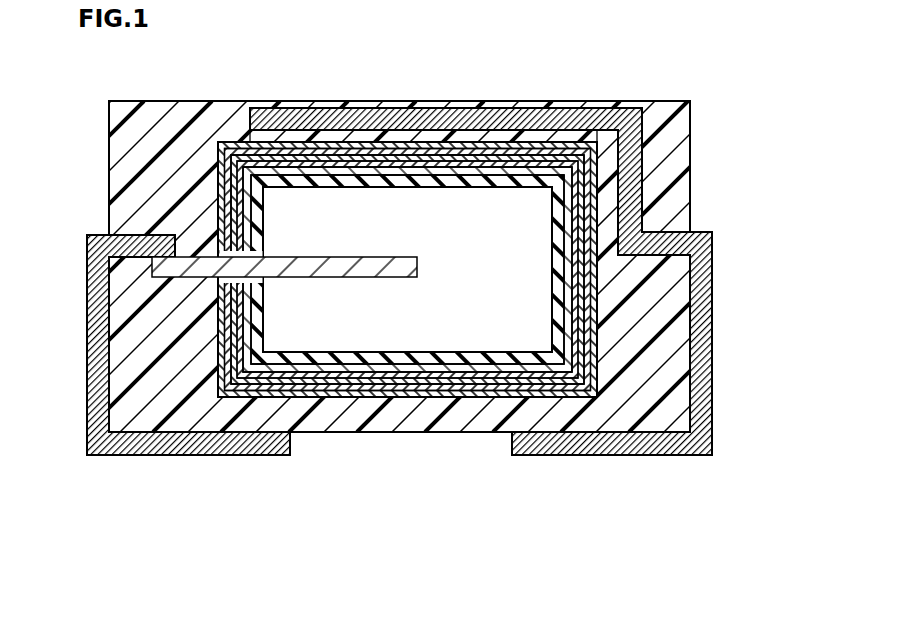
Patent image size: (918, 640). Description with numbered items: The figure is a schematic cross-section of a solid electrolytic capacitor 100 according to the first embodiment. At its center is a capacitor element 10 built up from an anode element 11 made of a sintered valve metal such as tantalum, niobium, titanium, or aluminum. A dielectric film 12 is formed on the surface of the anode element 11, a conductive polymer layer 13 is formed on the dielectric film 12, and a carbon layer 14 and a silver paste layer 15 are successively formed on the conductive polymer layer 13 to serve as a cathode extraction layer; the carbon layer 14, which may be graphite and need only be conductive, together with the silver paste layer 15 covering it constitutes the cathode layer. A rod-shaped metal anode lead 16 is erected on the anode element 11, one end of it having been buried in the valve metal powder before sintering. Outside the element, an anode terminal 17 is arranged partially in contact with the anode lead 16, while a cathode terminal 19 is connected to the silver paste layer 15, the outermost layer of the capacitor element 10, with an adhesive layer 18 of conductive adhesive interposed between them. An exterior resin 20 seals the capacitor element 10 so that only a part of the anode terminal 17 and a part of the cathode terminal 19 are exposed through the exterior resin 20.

The solid electrolytic capacitor 100 is at (670, 40).
The capacitor element 10 is at (511, 269).
The anode element 11 is at (515, 262).
The dielectric film 12 is at (562, 283).
The conductive polymer layer 13 is at (570, 311).
The carbon layer 14 is at (580, 340).
The silver paste layer 15 is at (590, 367).
The anode lead 16 is at (167, 268).
The anode terminal 17 is at (90, 322).
The adhesive layer 18 is at (512, 132).
The cathode terminal 19 is at (583, 138).
The exterior resin 20 is at (658, 137).